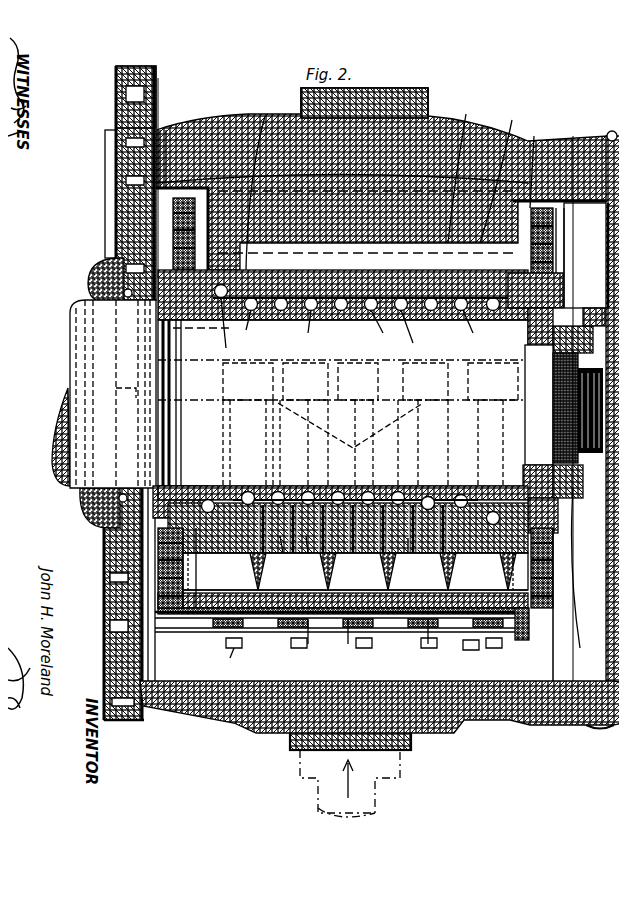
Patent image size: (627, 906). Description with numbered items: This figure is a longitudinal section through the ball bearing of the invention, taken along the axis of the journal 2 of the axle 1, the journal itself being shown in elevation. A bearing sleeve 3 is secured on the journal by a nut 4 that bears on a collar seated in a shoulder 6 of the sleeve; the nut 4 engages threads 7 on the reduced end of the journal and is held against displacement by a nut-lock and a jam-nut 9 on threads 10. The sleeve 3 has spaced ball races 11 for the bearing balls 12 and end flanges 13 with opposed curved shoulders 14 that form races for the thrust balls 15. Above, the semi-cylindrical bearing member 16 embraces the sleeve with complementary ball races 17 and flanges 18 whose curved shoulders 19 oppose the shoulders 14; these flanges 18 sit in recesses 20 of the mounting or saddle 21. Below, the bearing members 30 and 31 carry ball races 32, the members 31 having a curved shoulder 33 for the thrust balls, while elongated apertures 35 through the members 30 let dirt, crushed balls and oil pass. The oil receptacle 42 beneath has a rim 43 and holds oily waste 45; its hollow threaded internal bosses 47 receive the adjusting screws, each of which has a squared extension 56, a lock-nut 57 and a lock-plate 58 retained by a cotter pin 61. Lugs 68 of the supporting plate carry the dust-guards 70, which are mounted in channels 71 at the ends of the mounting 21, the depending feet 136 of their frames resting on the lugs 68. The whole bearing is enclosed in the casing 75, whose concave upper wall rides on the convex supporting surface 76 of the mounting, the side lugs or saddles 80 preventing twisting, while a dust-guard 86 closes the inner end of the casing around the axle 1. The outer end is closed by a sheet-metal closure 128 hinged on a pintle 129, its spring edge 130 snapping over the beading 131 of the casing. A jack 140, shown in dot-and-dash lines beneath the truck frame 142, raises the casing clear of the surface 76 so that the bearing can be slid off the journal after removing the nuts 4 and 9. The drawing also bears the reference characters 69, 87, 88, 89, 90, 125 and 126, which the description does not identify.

The axle 1 is at (68, 338).
The journal 2 is at (343, 378).
The bearing sleeve 3 is at (473, 334).
The nut 4 is at (562, 300).
The shoulder 6 is at (528, 345).
The threads 7 is at (548, 406).
The jam-nut 9 is at (586, 258).
The threads 10 is at (575, 310).
The ball races 11 is at (389, 334).
The bearing balls 12 is at (309, 334).
The flanges 13 is at (545, 290).
The curved shoulders 14 is at (492, 335).
The thrust balls 15 is at (200, 300).
The semi-cylindrical bearing member 16 is at (239, 331).
The ball races 17 is at (417, 339).
The flanges 18 is at (527, 160).
The curved shoulders 19 is at (258, 108).
The recesses 20 is at (505, 130).
The mounting or saddle 21 is at (424, 116).
The bearing members 30 is at (345, 490).
The bearing members 31 is at (238, 484).
The ball races 32 is at (418, 488).
The curved shoulder 33 is at (350, 571).
The elongated aperture 35 is at (295, 530).
The oil receptacle 42 is at (305, 640).
The rim 43 is at (553, 550).
The oily waste 45 is at (348, 640).
The internal bosses 47 is at (190, 652).
The squared extension 56 is at (465, 645).
The lock-nuts 57 is at (425, 640).
The lock-plates 58 is at (555, 500).
The cotter pins 61 is at (448, 645).
The lugs or extensions 68 is at (150, 620).
The rail 69 is at (285, 632).
The dust-guards 70 is at (150, 545).
The channels 71 is at (166, 612).
The casing 75 is at (178, 190).
The convex supporting surface 76 is at (462, 140).
The side lugs or saddles 80 is at (343, 423).
The dust-guard 86 is at (100, 212).
The column 87 is at (128, 58).
The column top 88 is at (108, 98).
The strip 89 is at (169, 146).
The bolt 90 is at (148, 84).
The packing 125 is at (80, 270).
The packing 126 is at (72, 500).
The closure 128 is at (596, 660).
The pintle 129 is at (604, 123).
The spring edge 130 is at (555, 728).
The beading 131 is at (585, 726).
The depending feet 136 is at (522, 620).
The jack 140 is at (292, 773).
The truck frame 142 is at (438, 82).